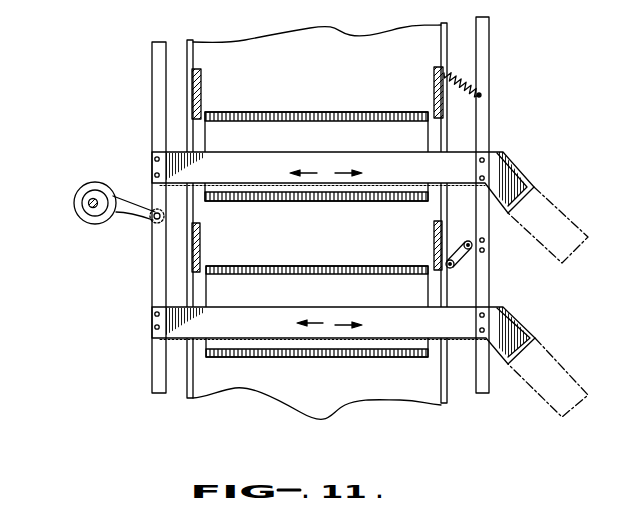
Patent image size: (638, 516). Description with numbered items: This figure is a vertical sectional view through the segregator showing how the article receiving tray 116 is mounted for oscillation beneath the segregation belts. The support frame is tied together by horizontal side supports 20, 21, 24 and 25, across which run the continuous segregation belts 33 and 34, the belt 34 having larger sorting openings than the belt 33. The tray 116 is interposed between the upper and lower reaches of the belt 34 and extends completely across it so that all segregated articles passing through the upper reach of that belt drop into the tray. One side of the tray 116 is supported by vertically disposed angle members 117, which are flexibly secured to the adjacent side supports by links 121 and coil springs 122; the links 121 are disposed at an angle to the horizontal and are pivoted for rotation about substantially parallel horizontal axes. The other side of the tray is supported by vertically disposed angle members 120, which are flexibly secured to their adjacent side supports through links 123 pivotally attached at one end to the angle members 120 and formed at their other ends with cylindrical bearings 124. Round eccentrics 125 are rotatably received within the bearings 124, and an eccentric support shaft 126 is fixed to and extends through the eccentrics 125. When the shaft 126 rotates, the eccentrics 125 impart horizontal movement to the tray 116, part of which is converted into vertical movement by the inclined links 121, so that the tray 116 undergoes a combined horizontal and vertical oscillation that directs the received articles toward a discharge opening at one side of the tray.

The side support 20 is at (435, 80).
The side support 21 is at (434, 232).
The side support 24 is at (202, 88).
The side support 25 is at (201, 252).
The segregation belt 33 is at (352, 112).
The segregation belt 34 is at (336, 266).
The article receiving tray 116 is at (513, 166).
The angle member 117 is at (484, 60).
The angle member 120 is at (151, 66).
The link 121 is at (462, 262).
The coil spring 122 is at (445, 72).
The link 123 is at (132, 201).
The cylindrical bearing 124 is at (97, 182).
The eccentric 125 is at (95, 216).
The eccentric support shaft 126 is at (89, 202).